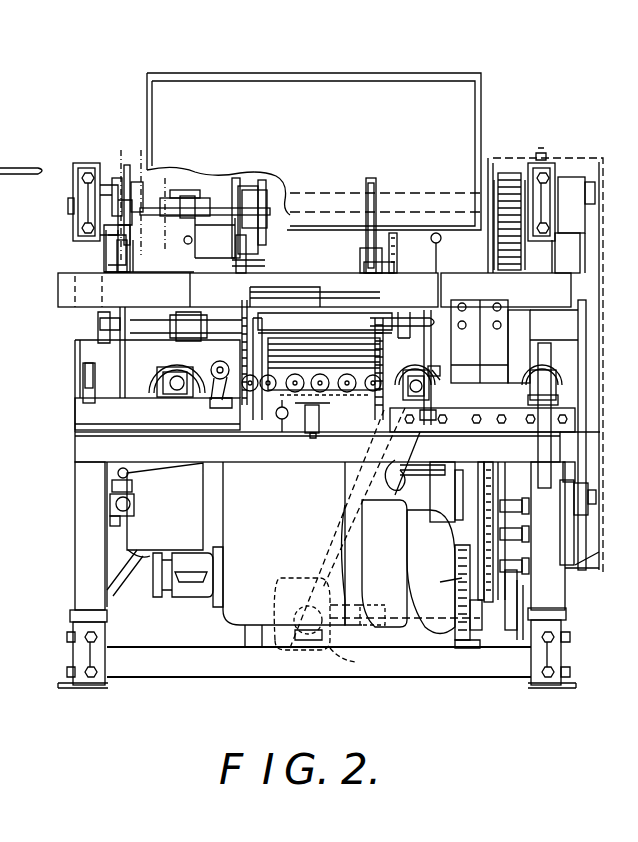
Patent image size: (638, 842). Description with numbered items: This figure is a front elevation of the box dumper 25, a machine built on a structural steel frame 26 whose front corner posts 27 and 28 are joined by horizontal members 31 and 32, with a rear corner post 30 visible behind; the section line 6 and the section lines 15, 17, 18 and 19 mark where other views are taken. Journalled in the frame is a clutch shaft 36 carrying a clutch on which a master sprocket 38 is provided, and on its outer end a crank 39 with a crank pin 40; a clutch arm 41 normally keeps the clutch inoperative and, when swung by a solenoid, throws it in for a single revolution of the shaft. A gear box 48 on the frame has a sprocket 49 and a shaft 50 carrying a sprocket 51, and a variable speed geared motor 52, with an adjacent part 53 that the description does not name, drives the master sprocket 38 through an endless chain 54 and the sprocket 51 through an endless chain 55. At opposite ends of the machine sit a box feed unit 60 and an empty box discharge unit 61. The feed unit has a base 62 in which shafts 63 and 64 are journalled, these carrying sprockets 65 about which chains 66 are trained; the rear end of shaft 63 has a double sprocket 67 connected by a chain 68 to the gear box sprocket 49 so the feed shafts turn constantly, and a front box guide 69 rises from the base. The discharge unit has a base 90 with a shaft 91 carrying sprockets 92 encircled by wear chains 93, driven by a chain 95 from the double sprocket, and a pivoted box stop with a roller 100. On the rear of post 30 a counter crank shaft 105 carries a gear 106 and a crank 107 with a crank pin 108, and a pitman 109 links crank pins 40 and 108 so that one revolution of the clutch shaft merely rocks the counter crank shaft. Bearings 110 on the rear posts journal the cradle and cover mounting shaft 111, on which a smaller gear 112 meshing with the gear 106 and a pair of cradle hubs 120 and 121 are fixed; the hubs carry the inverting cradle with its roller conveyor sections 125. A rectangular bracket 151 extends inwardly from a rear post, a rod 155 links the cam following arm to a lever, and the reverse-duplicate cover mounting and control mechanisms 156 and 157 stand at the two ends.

The section line 6- 6 is at (326, 45).
The box dumper 25 is at (569, 78).
The structural steel frame 26 is at (462, 676).
The front corner post 27 is at (78, 598).
The front corner post 28 is at (548, 597).
The rear corner post 30 is at (550, 258).
The horizontal member 31 is at (268, 455).
The horizontal member 32 is at (236, 675).
The clutch shaft 36 is at (574, 535).
The master sprocket 38 is at (496, 490).
The crank 39 is at (574, 520).
The crank pin 40 is at (596, 497).
The clutch arm 41 is at (455, 478).
The gear box 48 is at (353, 659).
The sprocket 49 is at (312, 605).
The shaft 50 is at (388, 622).
The sprocket 51 is at (475, 630).
The variable speed geared motor 52 is at (375, 563).
The clutch housing 53 is at (455, 568).
The endless chain 54 is at (495, 470).
The endless chain 55 is at (440, 592).
The box feed unit 60 is at (521, 343).
The empty box discharge unit 61 is at (166, 382).
The base 62 is at (570, 420).
The shaft 63 is at (506, 383).
The shaft 64 is at (556, 388).
The sprockets 65 is at (412, 366).
The chains 66 is at (432, 366).
The double sprocket 67 is at (388, 430).
The chain 68 is at (416, 440).
The front box guide 69 is at (508, 302).
The base 90 is at (76, 412).
The shaft 91 is at (175, 392).
The sprockets 92 is at (214, 362).
The chains 93 is at (161, 394).
The chain 95 is at (362, 408).
The roller 100 is at (223, 397).
The counter crank shaft 105 is at (568, 230).
The gear 106 is at (494, 252).
The crank 107 is at (572, 198).
The crank pin 108 is at (592, 192).
The pitman 109 is at (582, 332).
The bearings 110 is at (88, 168).
The cradle and cover mounting shaft 111 is at (70, 205).
The smaller gear 112 is at (491, 201).
The cradle hub 120 is at (262, 200).
The cradle hub 121 is at (378, 195).
The roller conveyor sections 125 is at (310, 370).
The rectangular shaped bracket 151 is at (148, 268).
The rod 155 is at (118, 352).
The cover mounting and control mechanism 156 is at (195, 259).
The cover mounting and control mechanism 157 is at (436, 256).
The section line 15- 15 is at (165, 178).
The section line 17- 17 is at (141, 153).
The section line 18- 18 is at (245, 158).
The section line 19- 19 is at (131, 139).